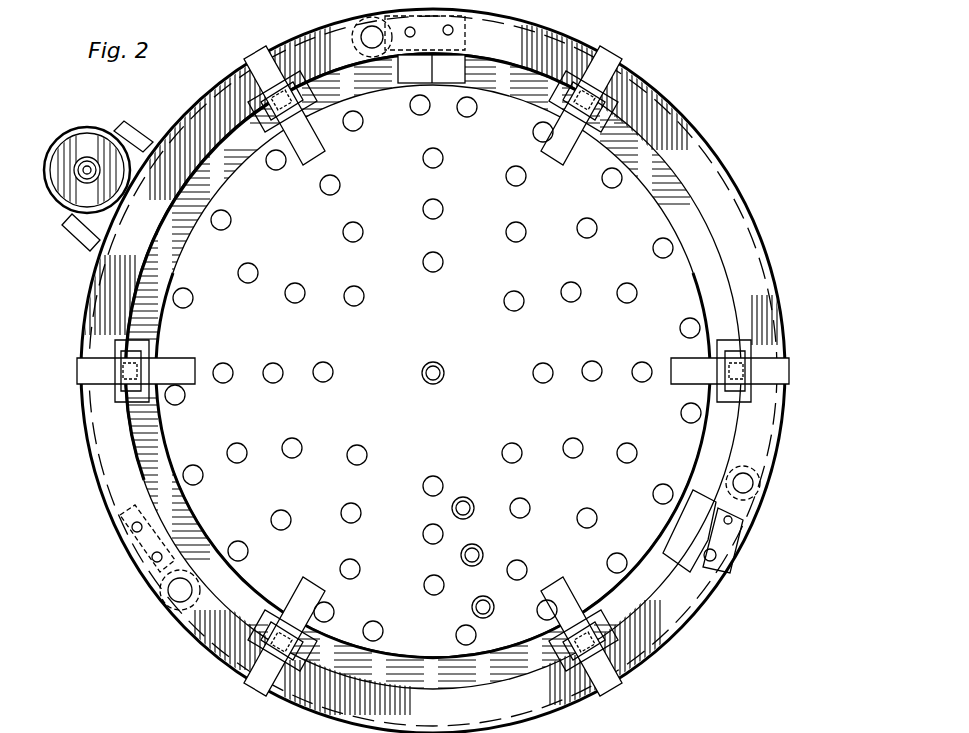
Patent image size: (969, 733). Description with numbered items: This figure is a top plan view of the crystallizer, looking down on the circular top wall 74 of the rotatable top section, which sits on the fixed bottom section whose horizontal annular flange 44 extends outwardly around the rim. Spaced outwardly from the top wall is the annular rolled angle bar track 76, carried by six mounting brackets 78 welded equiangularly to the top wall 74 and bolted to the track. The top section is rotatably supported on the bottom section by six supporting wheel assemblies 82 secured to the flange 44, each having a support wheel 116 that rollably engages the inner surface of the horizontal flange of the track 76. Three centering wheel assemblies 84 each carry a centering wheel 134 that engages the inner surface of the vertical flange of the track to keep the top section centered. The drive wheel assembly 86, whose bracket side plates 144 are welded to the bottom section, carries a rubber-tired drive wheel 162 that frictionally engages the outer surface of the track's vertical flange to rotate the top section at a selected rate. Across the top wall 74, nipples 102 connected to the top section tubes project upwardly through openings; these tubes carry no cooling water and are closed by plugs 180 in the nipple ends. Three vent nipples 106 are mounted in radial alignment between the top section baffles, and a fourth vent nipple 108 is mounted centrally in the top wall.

The annular flange 44 is at (677, 207).
The top wall 74 is at (640, 197).
The annular rolled angle bar track 76 is at (758, 232).
The mounting brackets 78 is at (165, 362).
The supporting wheel assemblies 82 is at (798, 392).
The centering wheel assemblies 84 is at (136, 582).
The drive wheel assembly 86 is at (68, 244).
The nipples 102 is at (342, 507).
The vent nipples 106 is at (482, 597).
The fourth vent nipple 108 is at (445, 365).
The support wheel 116 is at (790, 340).
The centering wheel 134 is at (352, 26).
The side plates 144 is at (148, 138).
The drive wheel 162 is at (82, 128).
The plugs 180 is at (230, 446).